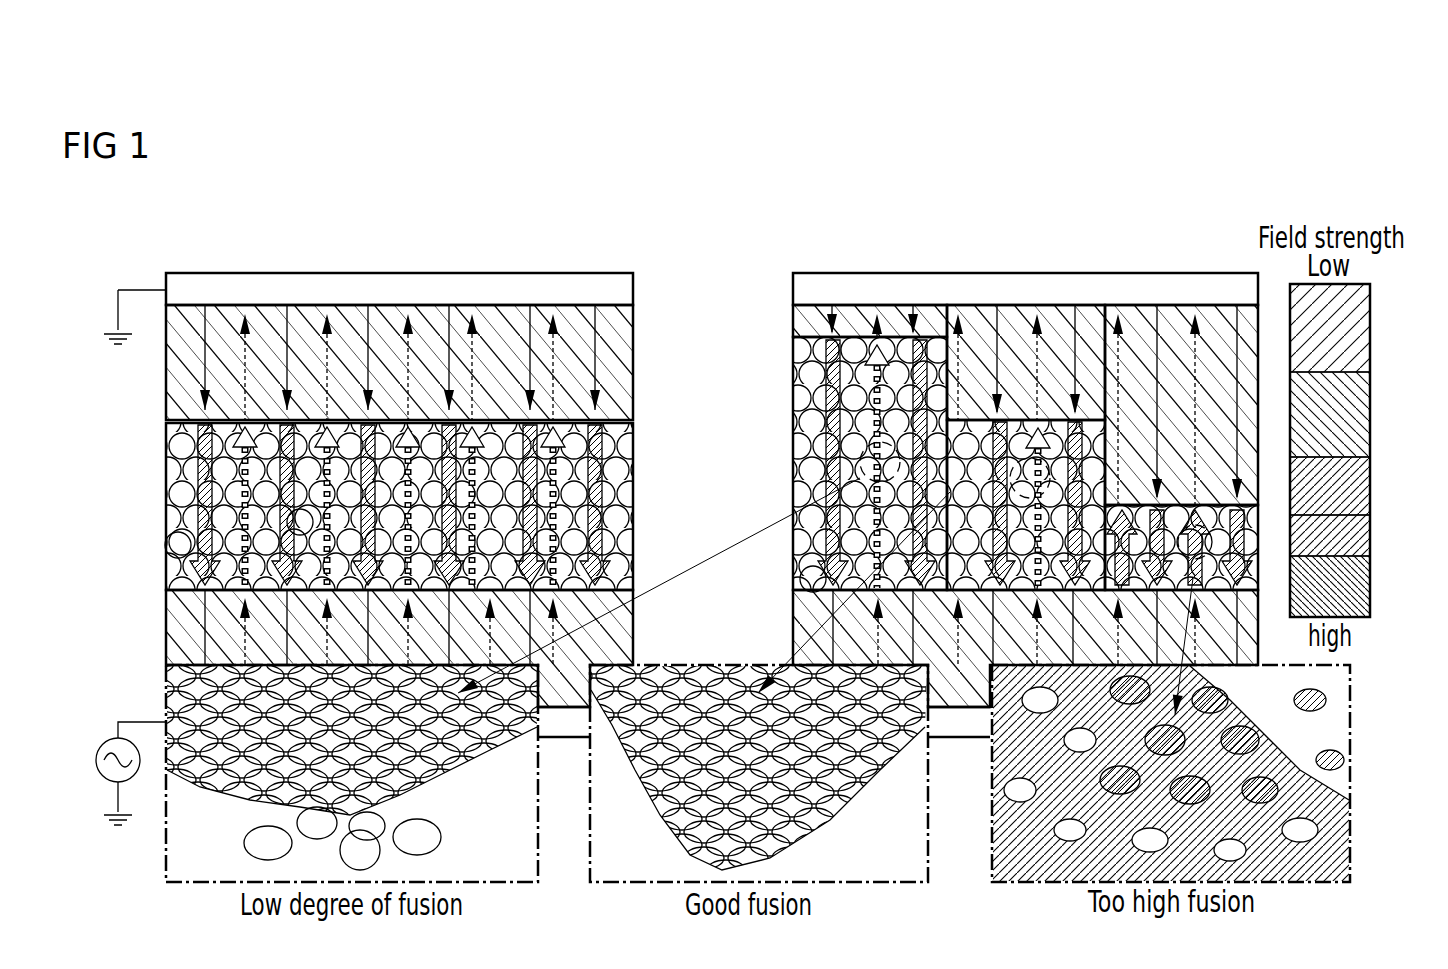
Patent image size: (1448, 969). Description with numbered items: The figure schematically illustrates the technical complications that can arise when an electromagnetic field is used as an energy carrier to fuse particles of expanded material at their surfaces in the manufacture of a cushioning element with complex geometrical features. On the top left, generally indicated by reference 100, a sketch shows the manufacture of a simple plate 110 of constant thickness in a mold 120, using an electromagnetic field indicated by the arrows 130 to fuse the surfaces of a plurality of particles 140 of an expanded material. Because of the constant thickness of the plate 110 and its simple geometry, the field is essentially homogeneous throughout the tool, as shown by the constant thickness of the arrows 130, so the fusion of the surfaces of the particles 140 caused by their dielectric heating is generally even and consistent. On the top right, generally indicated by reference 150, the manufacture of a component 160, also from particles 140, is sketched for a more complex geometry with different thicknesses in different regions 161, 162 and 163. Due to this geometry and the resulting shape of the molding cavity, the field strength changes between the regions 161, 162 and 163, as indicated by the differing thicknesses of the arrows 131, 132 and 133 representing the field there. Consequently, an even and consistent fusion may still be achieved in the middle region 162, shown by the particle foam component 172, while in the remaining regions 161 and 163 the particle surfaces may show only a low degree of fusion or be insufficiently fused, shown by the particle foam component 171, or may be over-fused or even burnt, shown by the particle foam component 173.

The sketch of simple plate manufacture 100 is at (385, 262).
The plate 110 is at (160, 505).
The mold 120 is at (178, 388).
The arrows indicating electromagnetic field 130 is at (545, 455).
The arrows representing field in first region 131 is at (833, 345).
The arrows representing field in middle region 132 is at (1080, 437).
The arrows representing field in third region 133 is at (1210, 553).
The particles 140 is at (300, 522).
The sketch of complex component manufacture 150 is at (1025, 329).
The component 160 is at (770, 452).
The first region 161 is at (947, 268).
The middle region 162 is at (1105, 268).
The third region 163 is at (1258, 268).
The particle foam component with low degree of fusion 171 is at (373, 742).
The particle foam component with good fusion 172 is at (772, 744).
The particle foam component with too high fusion 173 is at (1260, 712).